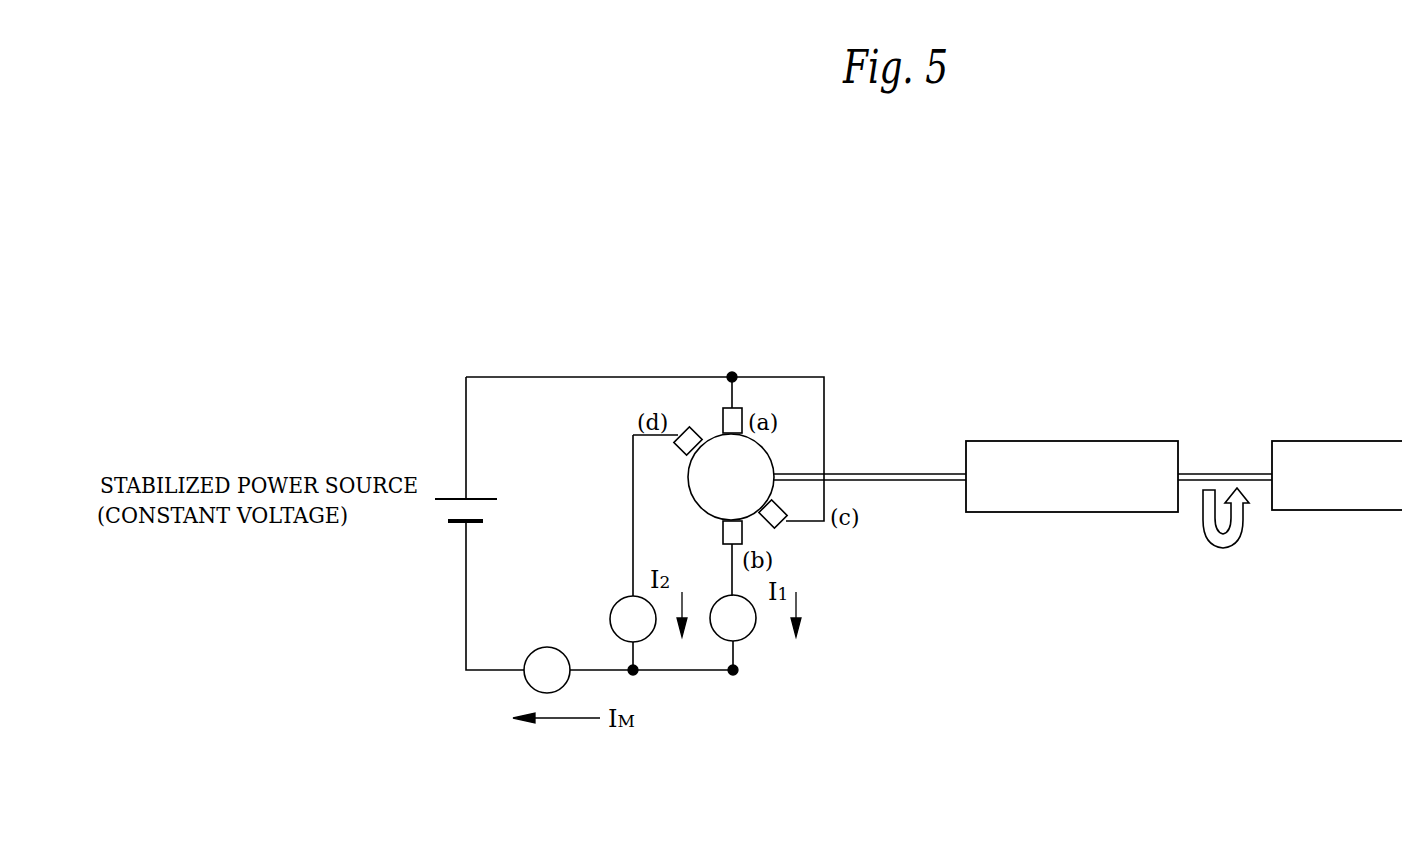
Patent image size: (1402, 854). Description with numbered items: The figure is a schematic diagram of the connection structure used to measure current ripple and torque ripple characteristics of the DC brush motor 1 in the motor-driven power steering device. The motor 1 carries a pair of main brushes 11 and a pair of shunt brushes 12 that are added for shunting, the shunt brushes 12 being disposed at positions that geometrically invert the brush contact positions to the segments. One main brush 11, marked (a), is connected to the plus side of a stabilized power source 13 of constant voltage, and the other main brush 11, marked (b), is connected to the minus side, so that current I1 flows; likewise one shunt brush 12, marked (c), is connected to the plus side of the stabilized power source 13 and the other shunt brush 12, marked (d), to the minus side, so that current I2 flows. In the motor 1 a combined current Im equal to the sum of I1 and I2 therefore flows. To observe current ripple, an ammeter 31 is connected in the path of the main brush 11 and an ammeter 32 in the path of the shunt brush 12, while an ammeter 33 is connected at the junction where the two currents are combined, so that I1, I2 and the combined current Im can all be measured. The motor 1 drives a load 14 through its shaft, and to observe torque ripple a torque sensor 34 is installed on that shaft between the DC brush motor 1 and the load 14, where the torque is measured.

The DC brush motor 1 is at (717, 435).
The main brush 11 is at (725, 407).
The shunt brush 12 is at (776, 525).
The stabilized power source 13 is at (448, 498).
The load 14 is at (1353, 441).
The ammeter 31 is at (755, 632).
The ammeter 32 is at (618, 597).
The ammeter 33 is at (548, 647).
The torque sensor 34 is at (1035, 441).